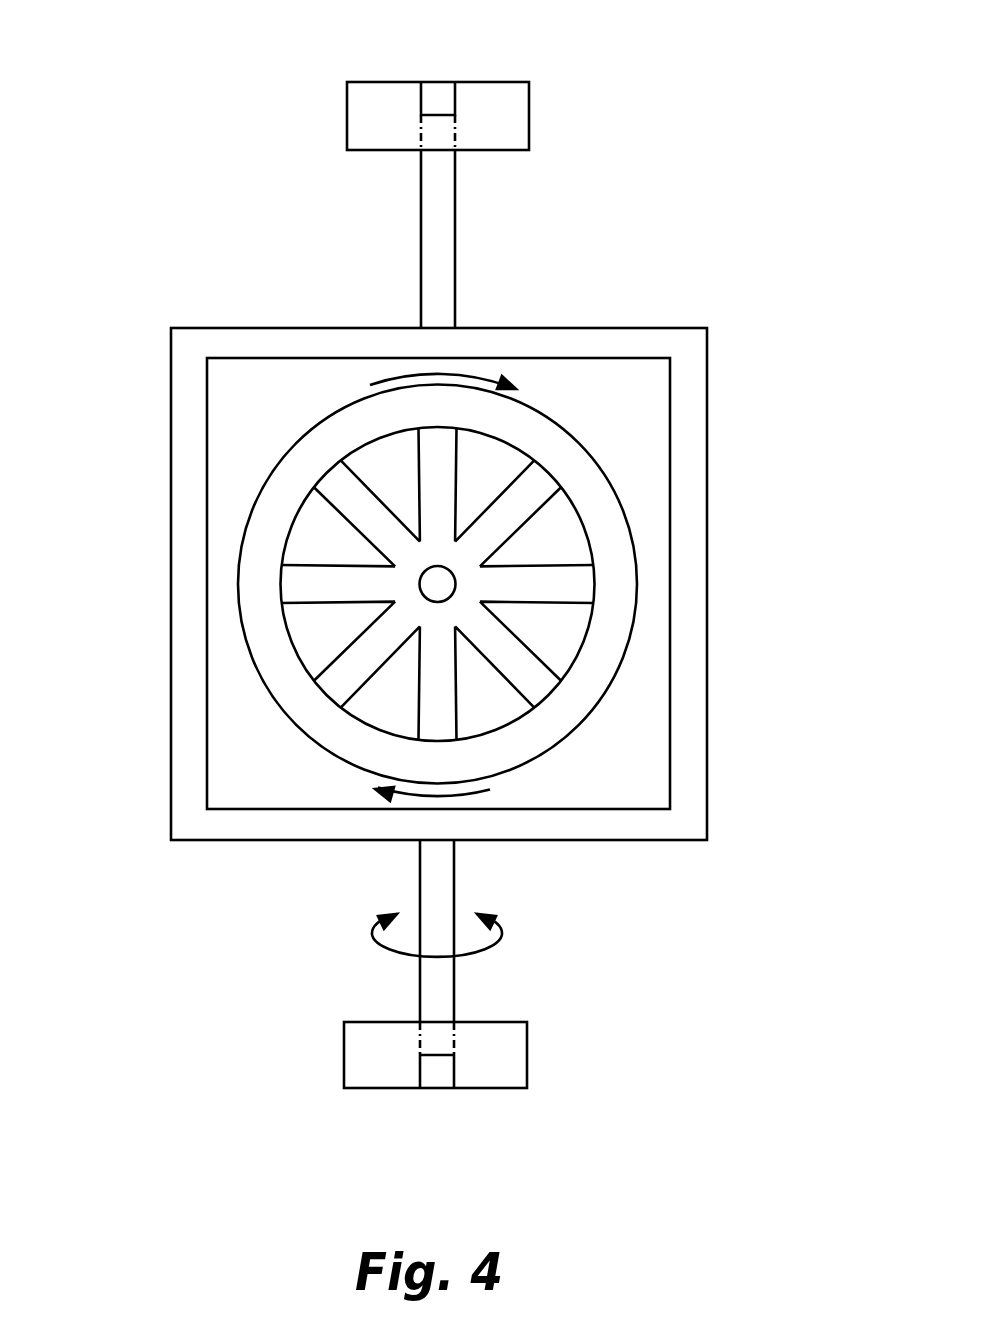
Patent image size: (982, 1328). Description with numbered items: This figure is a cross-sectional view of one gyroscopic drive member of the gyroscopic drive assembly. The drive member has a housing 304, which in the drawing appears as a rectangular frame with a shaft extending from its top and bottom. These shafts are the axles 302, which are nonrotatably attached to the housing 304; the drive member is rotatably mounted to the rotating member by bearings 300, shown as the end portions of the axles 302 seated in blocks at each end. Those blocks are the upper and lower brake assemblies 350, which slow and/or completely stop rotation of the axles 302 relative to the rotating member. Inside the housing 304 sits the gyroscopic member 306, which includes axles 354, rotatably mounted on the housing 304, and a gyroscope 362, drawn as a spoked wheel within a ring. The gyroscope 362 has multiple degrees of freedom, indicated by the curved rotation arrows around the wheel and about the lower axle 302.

The bearing 300 is at (437, 100).
The axle 302 is at (455, 261).
The housing 304 is at (707, 401).
The gyroscopic member 306 is at (642, 691).
The brake assembly 350 is at (529, 148).
The axle 354 is at (435, 587).
The gyroscope 362 is at (635, 607).